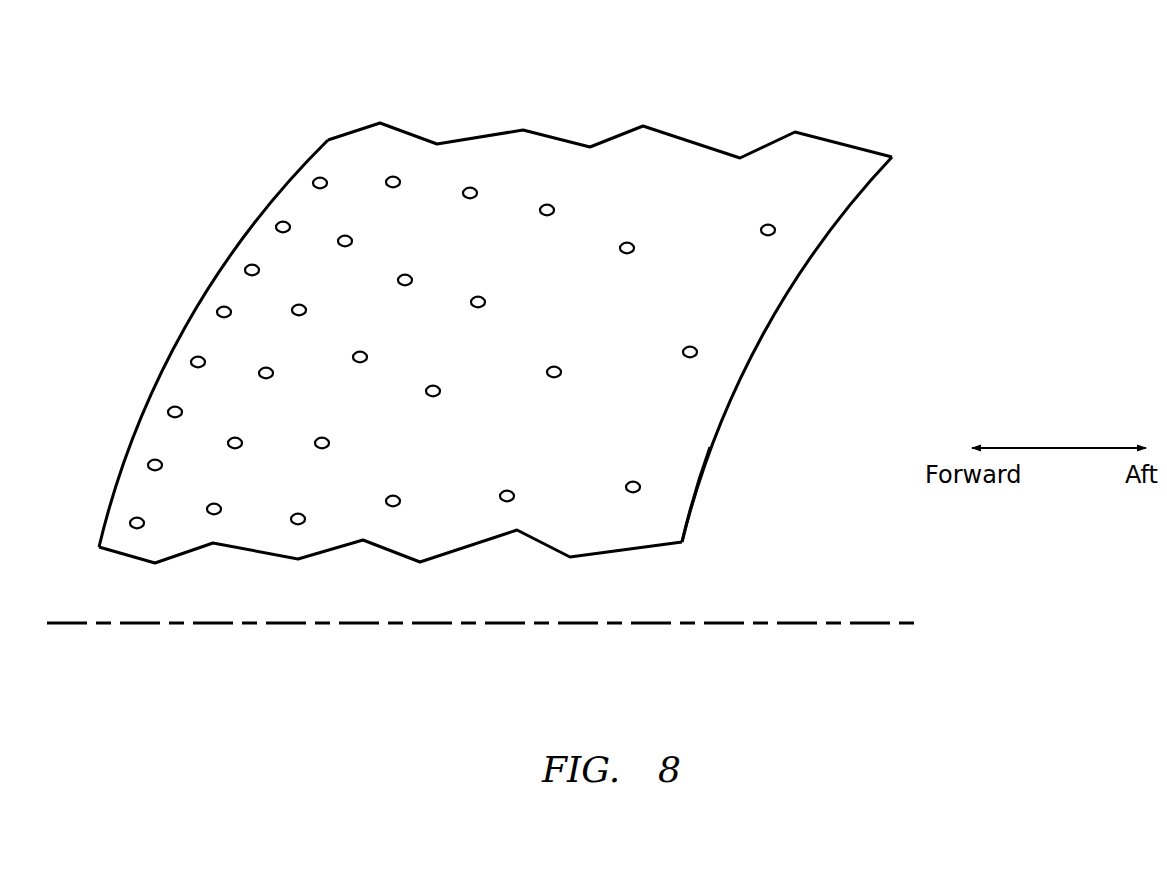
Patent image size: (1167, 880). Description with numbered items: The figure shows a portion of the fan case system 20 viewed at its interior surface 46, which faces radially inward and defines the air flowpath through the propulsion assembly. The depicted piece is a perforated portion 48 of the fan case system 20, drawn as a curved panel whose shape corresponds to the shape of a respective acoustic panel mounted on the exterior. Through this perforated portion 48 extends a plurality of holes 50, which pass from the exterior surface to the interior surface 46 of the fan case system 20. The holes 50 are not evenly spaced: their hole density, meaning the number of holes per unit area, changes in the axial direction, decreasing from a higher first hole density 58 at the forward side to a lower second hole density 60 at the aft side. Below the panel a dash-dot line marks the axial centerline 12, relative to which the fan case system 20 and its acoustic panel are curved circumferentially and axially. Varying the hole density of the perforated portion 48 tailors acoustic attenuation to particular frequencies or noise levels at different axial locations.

The axial centerline 12 is at (898, 625).
The fan case system 20 is at (968, 211).
The interior surface 46 is at (822, 205).
The perforated portion 48 is at (686, 434).
The plurality of holes 50 is at (635, 230).
The first hole density 58 is at (190, 302).
The second hole density 60 is at (760, 368).